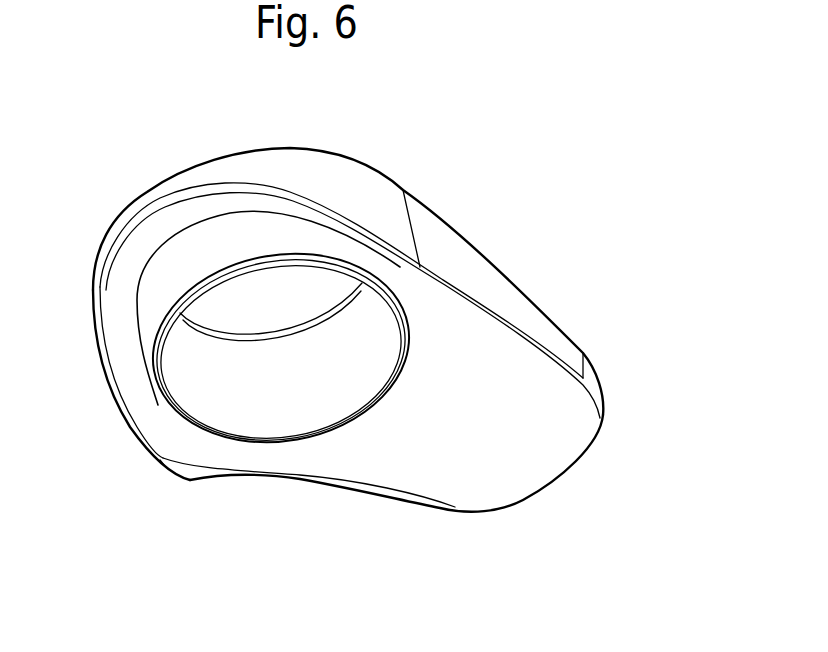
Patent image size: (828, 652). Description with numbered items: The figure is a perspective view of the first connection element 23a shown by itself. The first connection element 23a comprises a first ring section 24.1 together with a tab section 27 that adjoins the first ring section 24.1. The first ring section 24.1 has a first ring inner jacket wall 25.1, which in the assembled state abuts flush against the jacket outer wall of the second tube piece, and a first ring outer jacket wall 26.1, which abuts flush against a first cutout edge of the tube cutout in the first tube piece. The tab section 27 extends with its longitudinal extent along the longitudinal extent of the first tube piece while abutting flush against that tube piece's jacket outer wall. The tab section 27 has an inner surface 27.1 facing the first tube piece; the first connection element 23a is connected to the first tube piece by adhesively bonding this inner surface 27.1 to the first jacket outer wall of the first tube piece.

The first connection element 23a is at (513, 210).
The tab section 27 is at (532, 317).
The inner surface 27.1 is at (493, 435).
The first ring outer jacket wall 26.1 is at (178, 272).
The first ring section 24.1 is at (390, 378).
The first ring inner jacket wall 25.1 is at (222, 390).